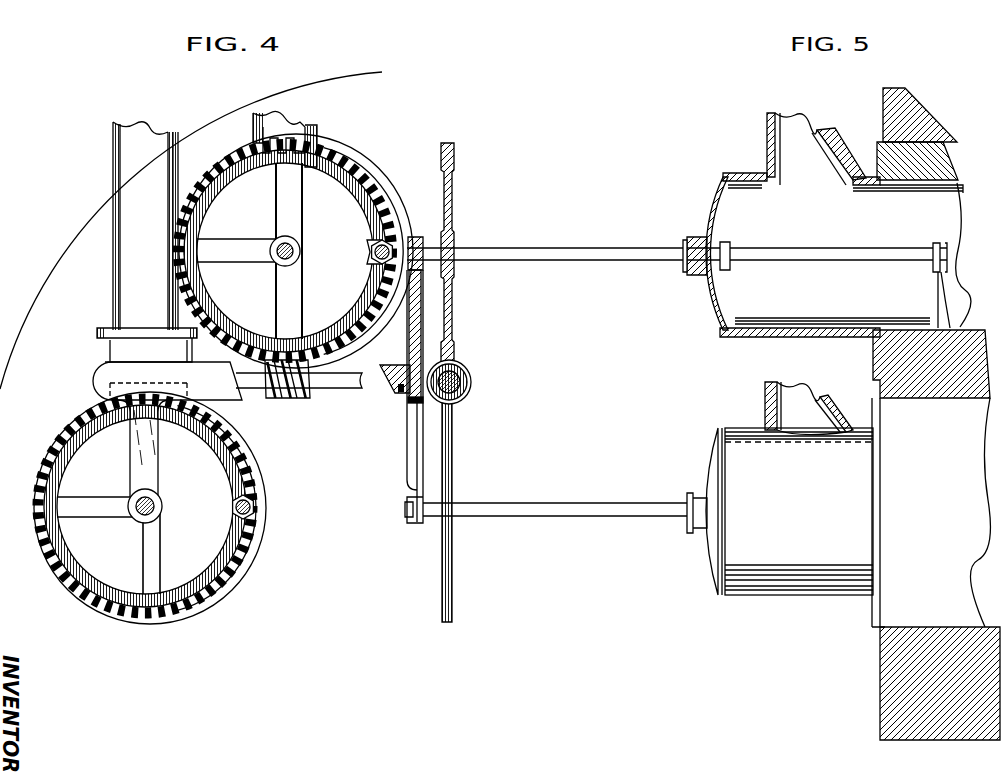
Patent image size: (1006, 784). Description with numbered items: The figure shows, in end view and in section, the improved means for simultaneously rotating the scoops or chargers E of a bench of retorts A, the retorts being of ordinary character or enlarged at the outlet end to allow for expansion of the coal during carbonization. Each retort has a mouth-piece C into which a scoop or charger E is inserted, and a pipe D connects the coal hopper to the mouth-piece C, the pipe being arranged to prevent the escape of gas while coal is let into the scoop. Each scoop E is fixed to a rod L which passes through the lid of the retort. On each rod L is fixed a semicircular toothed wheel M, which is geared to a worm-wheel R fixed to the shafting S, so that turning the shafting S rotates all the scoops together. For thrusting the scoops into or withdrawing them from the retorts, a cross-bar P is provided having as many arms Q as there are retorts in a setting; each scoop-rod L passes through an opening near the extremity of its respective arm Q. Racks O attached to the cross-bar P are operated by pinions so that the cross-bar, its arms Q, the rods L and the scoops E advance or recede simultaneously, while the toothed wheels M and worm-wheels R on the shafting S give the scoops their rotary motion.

In FIG. 5, the retort A is at (900, 209).
In FIG. 4, the mouth-piece C is at (296, 251).
In FIG. 5, the mouth-piece C is at (827, 384).
In FIG. 4, the pipe D is at (273, 108).
In FIG. 5, the pipe D is at (785, 168).
In FIG. 5, the scoop or charger E is at (832, 255).
In FIG. 4, the rod L is at (293, 251).
In FIG. 5, the rod L is at (584, 243).
In FIG. 4, the semicircular toothed wheel M is at (226, 178).
In FIG. 5, the semicircular toothed wheel M is at (455, 158).
In FIG. 5, the rack O is at (387, 392).
In FIG. 4, the cross-bar P is at (183, 374).
In FIG. 5, the cross-bar P is at (408, 403).
In FIG. 4, the arm Q is at (144, 448).
In FIG. 5, the arm Q is at (410, 336).
In FIG. 4, the worm-wheel R is at (290, 400).
In FIG. 5, the worm-wheel R is at (470, 380).
In FIG. 4, the shafting S is at (299, 390).
In FIG. 5, the shafting S is at (466, 394).